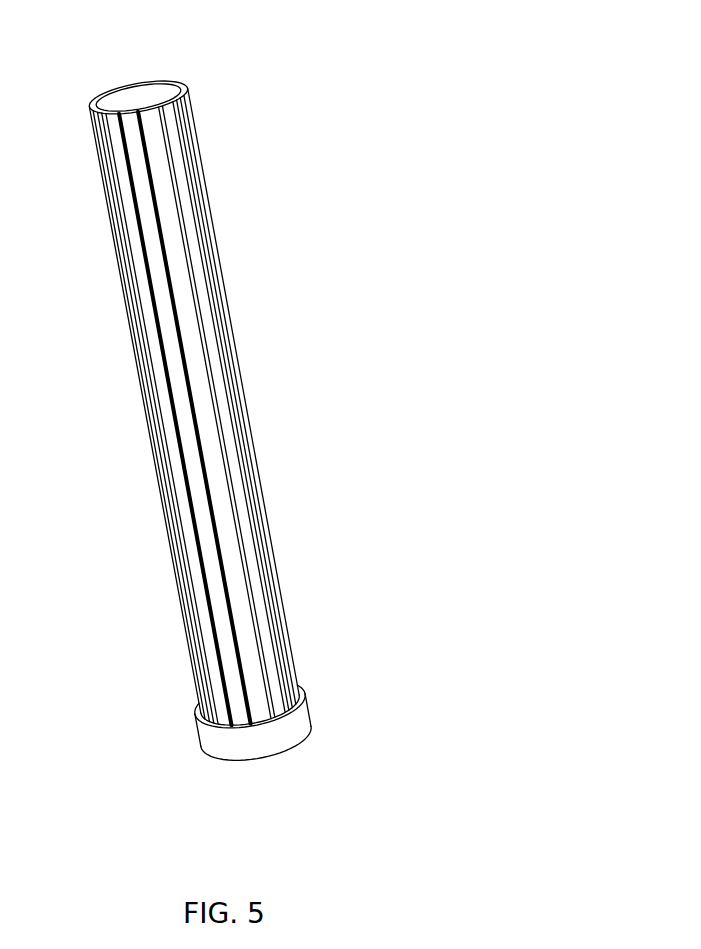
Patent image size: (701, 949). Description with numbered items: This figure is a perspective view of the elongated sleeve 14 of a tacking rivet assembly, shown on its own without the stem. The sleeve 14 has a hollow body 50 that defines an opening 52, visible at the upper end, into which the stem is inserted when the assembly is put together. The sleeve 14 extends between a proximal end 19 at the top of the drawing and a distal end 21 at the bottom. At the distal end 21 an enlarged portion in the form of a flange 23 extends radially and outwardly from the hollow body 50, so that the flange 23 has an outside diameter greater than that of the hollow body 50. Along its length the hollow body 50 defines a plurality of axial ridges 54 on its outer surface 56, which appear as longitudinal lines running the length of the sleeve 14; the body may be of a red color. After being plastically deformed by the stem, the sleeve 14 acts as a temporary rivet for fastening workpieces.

The elongated sleeve 14 is at (199, 393).
The proximal end 19 is at (164, 377).
The distal end 21 is at (248, 723).
The flange 23 is at (298, 713).
The hollow body 50 is at (215, 368).
The opening 52 is at (137, 101).
The axial ridges 54 is at (155, 210).
The outer surface 56 is at (233, 483).